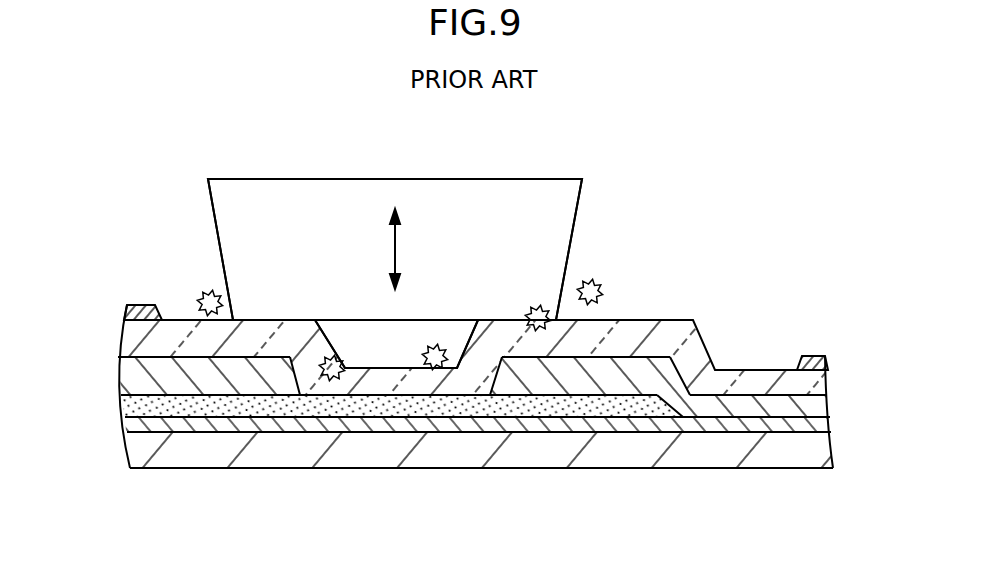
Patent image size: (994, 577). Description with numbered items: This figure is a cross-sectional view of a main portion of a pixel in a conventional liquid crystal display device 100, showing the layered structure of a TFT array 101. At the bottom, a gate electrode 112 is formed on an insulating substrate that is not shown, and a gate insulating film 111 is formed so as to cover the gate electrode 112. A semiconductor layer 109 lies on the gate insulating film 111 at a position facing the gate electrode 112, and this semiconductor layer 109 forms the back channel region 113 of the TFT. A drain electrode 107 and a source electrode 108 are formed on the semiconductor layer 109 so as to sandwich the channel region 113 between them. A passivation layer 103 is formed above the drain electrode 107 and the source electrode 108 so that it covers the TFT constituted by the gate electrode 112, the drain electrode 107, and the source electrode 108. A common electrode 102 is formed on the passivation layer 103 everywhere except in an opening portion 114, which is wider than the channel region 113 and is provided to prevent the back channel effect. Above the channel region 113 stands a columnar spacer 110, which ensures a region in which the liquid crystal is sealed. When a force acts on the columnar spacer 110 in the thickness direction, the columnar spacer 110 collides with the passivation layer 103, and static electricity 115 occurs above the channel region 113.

The liquid crystal display device 100 is at (733, 153).
The TFT array 101 is at (853, 320).
The common electrode 102 is at (123, 312).
The passivation layer 103 is at (137, 342).
The drain electrode 107 is at (135, 377).
The source electrode 108 is at (742, 407).
The semiconductor layer 109 is at (140, 405).
The columnar spacer 110 is at (567, 212).
The gate insulating film 111 is at (138, 423).
The gate electrode 112 is at (140, 448).
The back channel region 113 is at (424, 396).
The opening portion 114 is at (382, 345).
The static electricity 115 is at (205, 296).